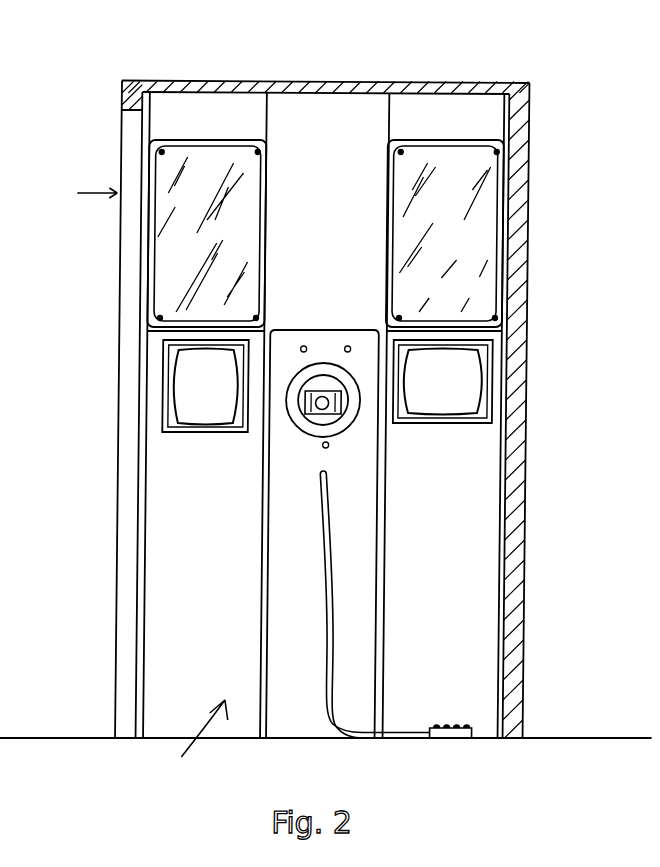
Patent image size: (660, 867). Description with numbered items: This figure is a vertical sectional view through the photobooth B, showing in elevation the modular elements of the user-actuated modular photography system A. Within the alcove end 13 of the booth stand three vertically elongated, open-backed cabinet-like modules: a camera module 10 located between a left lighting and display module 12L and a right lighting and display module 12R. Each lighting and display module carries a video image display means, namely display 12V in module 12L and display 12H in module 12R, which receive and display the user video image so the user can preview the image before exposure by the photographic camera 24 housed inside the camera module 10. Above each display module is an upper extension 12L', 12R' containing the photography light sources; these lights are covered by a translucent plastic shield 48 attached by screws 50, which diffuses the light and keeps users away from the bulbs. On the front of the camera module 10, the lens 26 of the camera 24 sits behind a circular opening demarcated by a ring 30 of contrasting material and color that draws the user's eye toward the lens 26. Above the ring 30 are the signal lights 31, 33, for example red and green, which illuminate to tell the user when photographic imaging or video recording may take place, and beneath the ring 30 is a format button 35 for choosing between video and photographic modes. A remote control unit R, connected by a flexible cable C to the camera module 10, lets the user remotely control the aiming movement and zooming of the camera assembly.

The camera module 10 is at (293, 705).
The lighting and display module 12L is at (154, 415).
The lighting and display module 12R is at (510, 415).
The upper extension 12L' is at (151, 233).
The upper extension 12R' is at (515, 232).
The video image display means 12V is at (190, 375).
The video image display means 12H is at (468, 378).
The alcove end 13 is at (390, 113).
The photographic camera 24 is at (316, 412).
The lens 26 is at (341, 391).
The ring 30 is at (344, 424).
The signal light 31 is at (303, 346).
The signal light 33 is at (347, 346).
The format button 35 is at (329, 449).
The translucent plastic shield 48 is at (152, 268).
The screws 50 is at (501, 139).
The user-actuated modular photography system A is at (193, 739).
The photobooth B is at (87, 194).
The flexible cable C is at (328, 636).
The remote control unit R is at (450, 739).